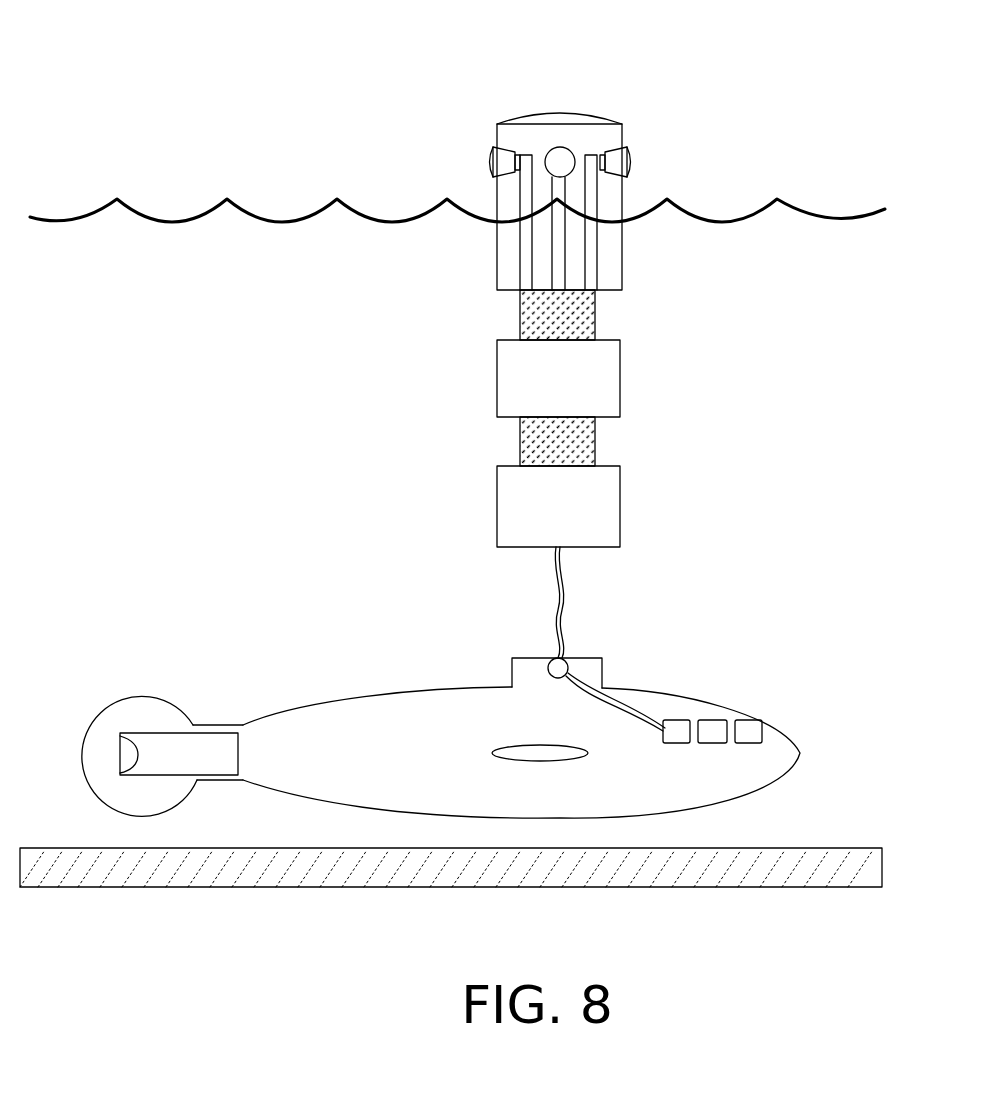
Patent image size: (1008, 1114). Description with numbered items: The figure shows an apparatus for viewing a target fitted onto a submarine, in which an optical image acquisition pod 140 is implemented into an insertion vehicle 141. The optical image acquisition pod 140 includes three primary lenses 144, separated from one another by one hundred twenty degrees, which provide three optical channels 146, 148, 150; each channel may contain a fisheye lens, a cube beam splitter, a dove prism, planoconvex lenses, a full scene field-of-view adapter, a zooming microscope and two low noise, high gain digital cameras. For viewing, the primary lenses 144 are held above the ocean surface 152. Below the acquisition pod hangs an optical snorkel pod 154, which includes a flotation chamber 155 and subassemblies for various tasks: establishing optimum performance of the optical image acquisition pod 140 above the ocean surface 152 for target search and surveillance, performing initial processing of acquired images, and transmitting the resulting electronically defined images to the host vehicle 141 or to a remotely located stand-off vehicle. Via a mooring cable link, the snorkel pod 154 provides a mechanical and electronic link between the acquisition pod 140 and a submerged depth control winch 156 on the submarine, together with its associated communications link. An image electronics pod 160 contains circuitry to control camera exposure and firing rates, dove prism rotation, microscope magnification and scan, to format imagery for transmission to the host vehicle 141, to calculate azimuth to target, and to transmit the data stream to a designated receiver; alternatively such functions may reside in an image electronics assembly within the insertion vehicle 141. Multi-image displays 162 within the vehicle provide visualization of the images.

The optical image acquisition pod 140 is at (500, 105).
The insertion vehicle 141 is at (392, 690).
The primary lenses 144 is at (562, 147).
The optical channel 146 is at (497, 232).
The optical channel 148 is at (565, 245).
The optical channel 150 is at (622, 236).
The ocean surface 152 is at (155, 215).
The optical snorkel pod 154 is at (645, 440).
The flotation chamber 155 is at (497, 377).
The submerged depth control winch 156 is at (567, 658).
The image electronics pod 160 is at (497, 505).
The multi-image display 162 is at (760, 718).